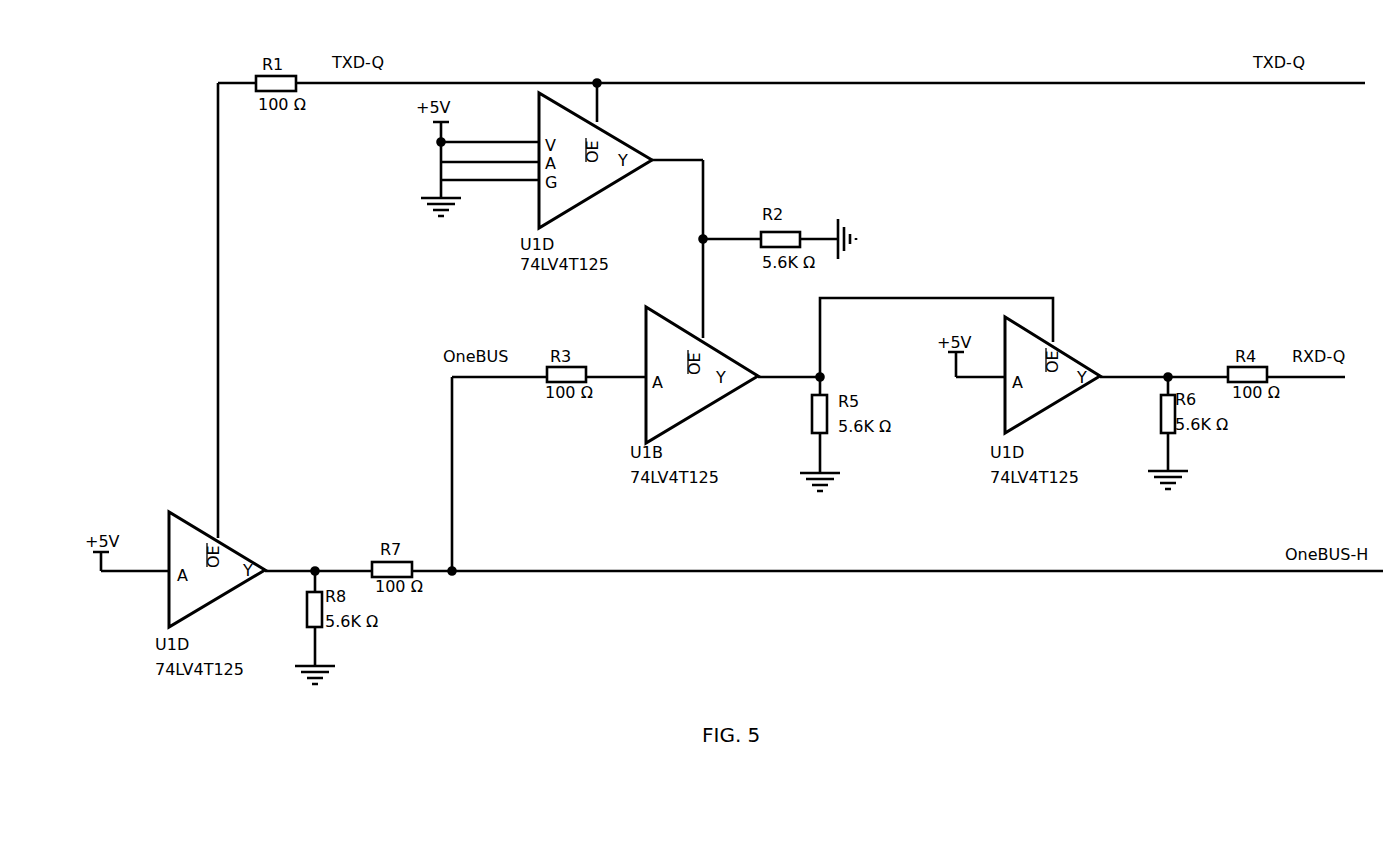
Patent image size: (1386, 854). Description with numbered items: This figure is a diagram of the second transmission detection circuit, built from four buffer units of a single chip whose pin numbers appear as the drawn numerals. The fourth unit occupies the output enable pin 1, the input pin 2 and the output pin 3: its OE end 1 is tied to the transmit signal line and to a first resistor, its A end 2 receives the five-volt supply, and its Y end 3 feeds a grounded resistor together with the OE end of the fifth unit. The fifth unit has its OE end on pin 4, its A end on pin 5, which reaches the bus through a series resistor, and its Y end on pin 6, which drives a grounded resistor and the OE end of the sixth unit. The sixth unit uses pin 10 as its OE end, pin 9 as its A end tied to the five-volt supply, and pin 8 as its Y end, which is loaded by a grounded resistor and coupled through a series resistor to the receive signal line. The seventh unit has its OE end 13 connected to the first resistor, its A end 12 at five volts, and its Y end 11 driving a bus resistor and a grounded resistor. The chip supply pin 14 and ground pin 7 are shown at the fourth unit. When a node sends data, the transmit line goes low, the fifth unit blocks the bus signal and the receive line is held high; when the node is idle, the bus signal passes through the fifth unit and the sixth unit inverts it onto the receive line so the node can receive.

The output enable pin OE of first buffer U1D 1 is at (582, 102).
The input pin A of first buffer U1D 2 is at (490, 155).
The output pin Y of first buffer U1D 3 is at (677, 150).
The output enable pin OE of buffer U1B 4 is at (690, 249).
The input pin A of buffer U1B 5 is at (616, 365).
The output pin Y of buffer U1B 6 is at (789, 365).
The ground pin G of first buffer U1D 7 is at (490, 173).
The output pin Y of third buffer U1D 8 is at (1134, 366).
The input pin A of third buffer U1D 9 is at (980, 366).
The output enable pin OE of third buffer U1D 10 is at (938, 337).
The output pin Y of fourth buffer U1D 11 is at (290, 558).
The input pin A of fourth buffer U1D 12 is at (135, 559).
The output enable pin OE of fourth buffer U1D 13 is at (211, 310).
The supply pin V of first buffer U1D 14 is at (490, 136).